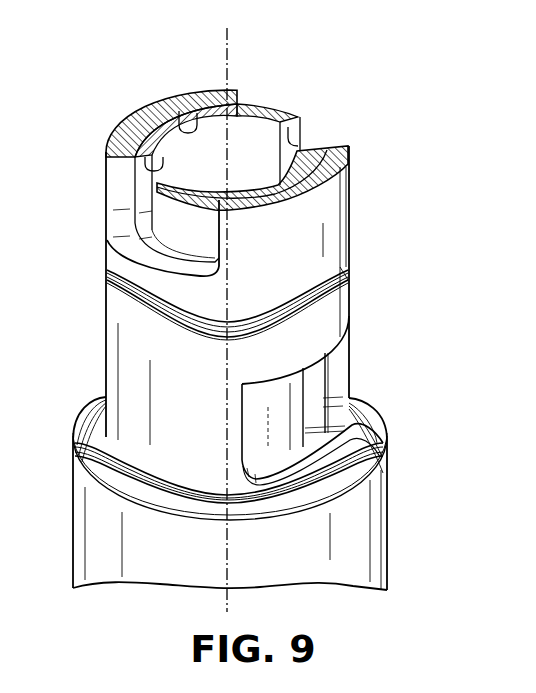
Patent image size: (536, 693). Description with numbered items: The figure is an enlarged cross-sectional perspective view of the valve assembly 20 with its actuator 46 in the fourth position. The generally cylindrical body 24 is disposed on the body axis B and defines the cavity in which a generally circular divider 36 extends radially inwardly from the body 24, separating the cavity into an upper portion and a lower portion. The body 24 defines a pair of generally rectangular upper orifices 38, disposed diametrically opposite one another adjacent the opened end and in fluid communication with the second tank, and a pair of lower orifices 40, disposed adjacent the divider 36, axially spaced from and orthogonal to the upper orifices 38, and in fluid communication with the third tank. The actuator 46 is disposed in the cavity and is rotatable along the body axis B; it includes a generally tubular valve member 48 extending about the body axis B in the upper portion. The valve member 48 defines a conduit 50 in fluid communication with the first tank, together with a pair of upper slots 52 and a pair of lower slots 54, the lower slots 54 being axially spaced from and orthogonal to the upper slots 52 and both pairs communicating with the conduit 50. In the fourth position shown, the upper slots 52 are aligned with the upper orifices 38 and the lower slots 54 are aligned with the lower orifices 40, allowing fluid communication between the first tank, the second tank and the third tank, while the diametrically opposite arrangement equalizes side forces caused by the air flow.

The body axis B is at (228, 68).
The valve assembly 20 is at (73, 311).
The body 24 is at (395, 427).
The divider 36 is at (103, 430).
The upper orifice 38 is at (118, 188).
The lower orifice 40 is at (338, 357).
The actuator 46 is at (257, 103).
The valve member 48 is at (272, 112).
The conduit 50 is at (190, 108).
The upper slot 52 is at (162, 148).
The lower slot 54 is at (319, 427).